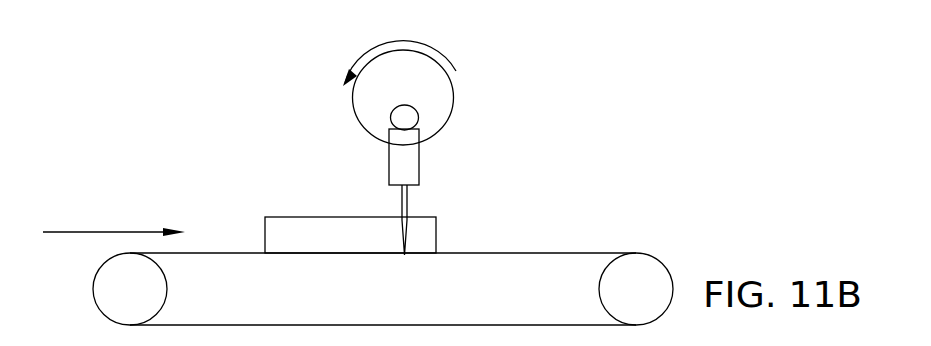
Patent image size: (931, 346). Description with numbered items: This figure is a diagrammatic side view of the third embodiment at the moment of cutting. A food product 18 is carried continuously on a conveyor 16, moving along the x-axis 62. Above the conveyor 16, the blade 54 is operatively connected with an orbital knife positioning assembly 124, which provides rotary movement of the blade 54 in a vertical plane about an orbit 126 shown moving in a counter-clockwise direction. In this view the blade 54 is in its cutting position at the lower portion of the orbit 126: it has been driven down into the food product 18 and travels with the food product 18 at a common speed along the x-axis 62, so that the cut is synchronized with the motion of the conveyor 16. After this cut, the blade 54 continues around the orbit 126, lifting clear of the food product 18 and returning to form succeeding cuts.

The conveyor 16 is at (404, 210).
The food product 18 is at (325, 184).
The blade 54 is at (454, 192).
The x-axis 62 is at (114, 175).
The orbital knife positioning assembly 124 is at (488, 89).
The orbit 126 is at (355, 63).